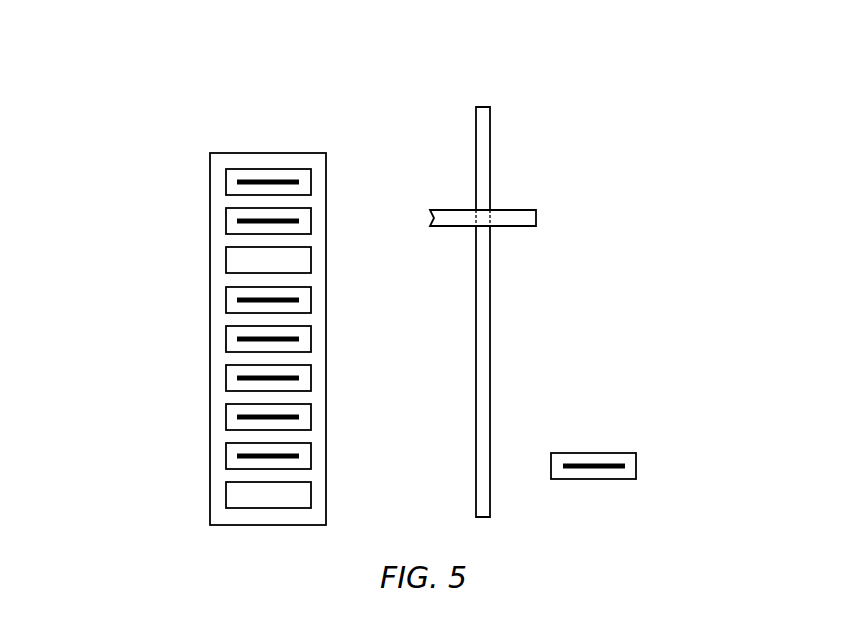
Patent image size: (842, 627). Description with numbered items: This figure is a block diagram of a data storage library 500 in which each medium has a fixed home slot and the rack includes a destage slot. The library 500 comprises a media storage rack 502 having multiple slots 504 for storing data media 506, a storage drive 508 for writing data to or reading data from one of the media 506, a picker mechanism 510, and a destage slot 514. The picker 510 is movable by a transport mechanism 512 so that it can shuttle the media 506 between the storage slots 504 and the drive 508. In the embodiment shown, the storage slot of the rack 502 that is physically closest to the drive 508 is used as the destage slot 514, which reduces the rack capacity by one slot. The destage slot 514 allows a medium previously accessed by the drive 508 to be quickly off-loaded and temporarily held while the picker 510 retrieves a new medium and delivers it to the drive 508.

The library 500 is at (432, 66).
The media storage rack 502 is at (224, 303).
The slots 504 is at (311, 178).
The data media 506 is at (280, 300).
The storage drive 508 is at (636, 466).
The picker mechanism 510 is at (536, 215).
The transport mechanism 512 is at (490, 312).
The destage slot 514 is at (311, 495).